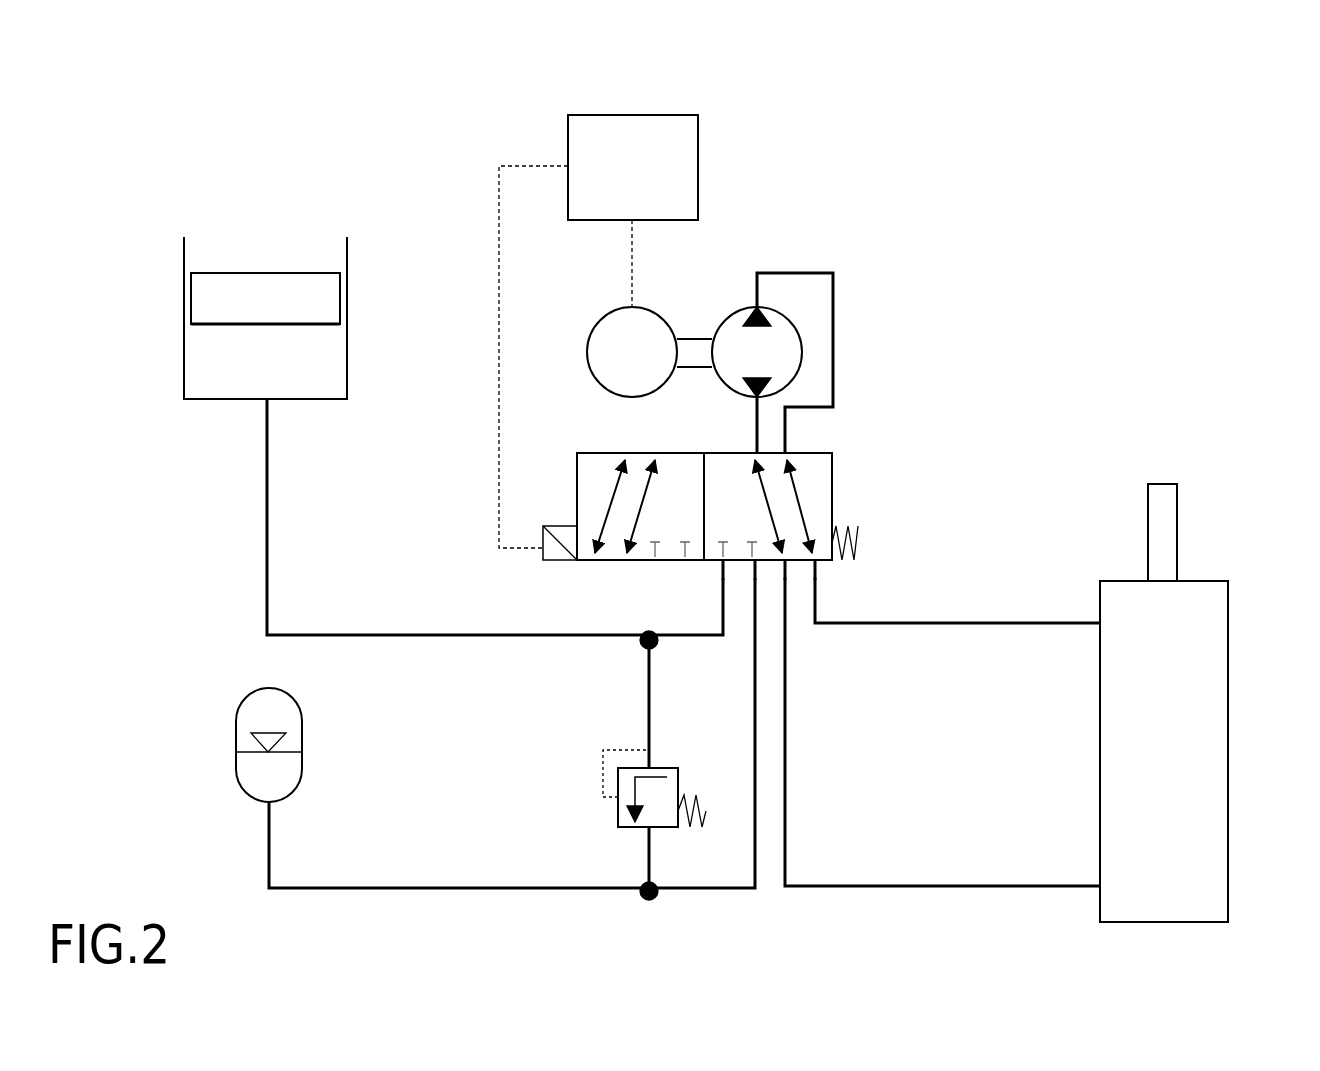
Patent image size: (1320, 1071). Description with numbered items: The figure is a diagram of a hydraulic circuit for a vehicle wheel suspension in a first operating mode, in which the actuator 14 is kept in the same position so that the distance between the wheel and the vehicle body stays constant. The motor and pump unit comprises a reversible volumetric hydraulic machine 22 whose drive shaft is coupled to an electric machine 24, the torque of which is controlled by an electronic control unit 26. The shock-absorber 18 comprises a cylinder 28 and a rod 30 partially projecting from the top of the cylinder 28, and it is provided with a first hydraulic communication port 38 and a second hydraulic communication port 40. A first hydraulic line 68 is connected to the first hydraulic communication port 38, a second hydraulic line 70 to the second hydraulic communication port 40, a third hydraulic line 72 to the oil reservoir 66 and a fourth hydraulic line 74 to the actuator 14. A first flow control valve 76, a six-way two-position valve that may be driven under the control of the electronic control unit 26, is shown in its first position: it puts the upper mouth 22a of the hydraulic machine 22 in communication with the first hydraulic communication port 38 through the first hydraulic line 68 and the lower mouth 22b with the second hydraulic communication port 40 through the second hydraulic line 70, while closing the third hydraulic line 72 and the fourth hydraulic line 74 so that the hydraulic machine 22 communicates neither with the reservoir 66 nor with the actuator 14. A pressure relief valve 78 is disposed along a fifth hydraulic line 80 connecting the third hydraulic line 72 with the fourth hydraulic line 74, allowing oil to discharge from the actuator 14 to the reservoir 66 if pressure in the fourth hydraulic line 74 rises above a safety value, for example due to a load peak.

The actuator 14 is at (185, 335).
The shock-absorber 18 is at (1179, 678).
The volumetric hydraulic machine 22 is at (783, 312).
The upper mouth 22a is at (757, 305).
The lower mouth 22b is at (750, 398).
The electric machine 24 is at (588, 337).
The electronic control unit 26 is at (580, 115).
The cylinder 28 is at (1212, 620).
The rod 30 is at (1177, 510).
The first hydraulic communication port 38 is at (1100, 623).
The second hydraulic communication port 40 is at (1103, 885).
The oil reservoir 66 is at (236, 712).
The first hydraulic line 68 is at (927, 623).
The second hydraulic line 70 is at (940, 890).
The third hydraulic line 72 is at (450, 888).
The fourth hydraulic line 74 is at (430, 635).
The first flow control valve 76 is at (565, 458).
The pressure relief valve 78 is at (618, 818).
The fifth hydraulic line 80 is at (649, 692).